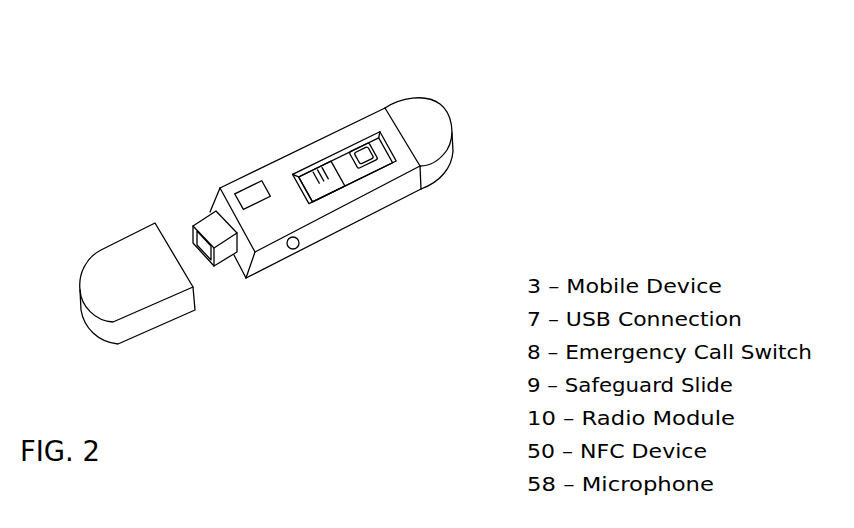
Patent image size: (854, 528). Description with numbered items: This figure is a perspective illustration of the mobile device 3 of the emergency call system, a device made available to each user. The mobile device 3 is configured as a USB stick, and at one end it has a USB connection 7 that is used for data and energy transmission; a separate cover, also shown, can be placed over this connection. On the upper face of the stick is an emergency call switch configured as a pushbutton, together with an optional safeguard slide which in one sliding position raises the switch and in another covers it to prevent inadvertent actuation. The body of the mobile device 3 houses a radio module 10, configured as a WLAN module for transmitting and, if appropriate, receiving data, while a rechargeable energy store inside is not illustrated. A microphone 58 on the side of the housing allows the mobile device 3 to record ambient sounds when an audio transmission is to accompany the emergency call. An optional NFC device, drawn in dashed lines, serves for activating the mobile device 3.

The mobile device 3 is at (168, 148).
The USB connection 7 is at (228, 309).
The radio module 10 is at (432, 124).
The microphone 58 is at (294, 250).